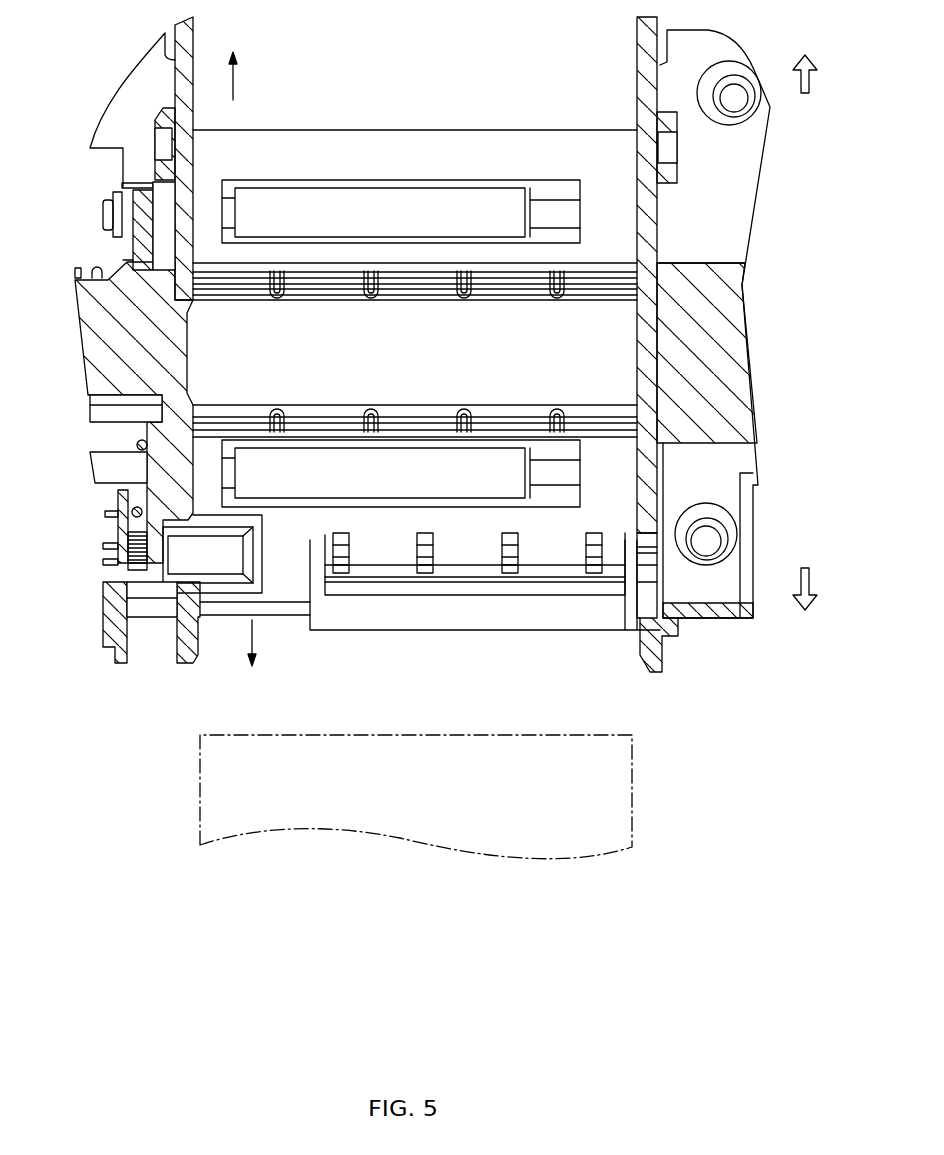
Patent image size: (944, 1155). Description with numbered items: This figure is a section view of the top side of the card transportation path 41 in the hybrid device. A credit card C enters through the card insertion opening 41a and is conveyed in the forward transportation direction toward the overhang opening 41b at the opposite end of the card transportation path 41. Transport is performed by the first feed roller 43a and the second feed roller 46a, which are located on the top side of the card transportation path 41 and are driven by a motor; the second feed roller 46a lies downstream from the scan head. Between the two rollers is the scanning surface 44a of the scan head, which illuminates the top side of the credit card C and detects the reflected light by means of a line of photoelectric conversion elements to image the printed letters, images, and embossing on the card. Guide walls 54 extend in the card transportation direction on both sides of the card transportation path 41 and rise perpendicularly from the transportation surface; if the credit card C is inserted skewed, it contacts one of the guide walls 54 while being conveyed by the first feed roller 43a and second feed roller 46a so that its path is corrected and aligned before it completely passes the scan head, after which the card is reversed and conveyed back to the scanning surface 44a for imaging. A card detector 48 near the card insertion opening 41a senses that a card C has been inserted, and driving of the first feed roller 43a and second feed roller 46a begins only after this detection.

The card transportation path 41 is at (524, 112).
The card insertion opening 41a is at (345, 681).
The overhang opening 41b is at (345, 37).
The first feed roller 43a is at (505, 470).
The scanning surface 44a is at (612, 349).
The second feed roller 46a is at (410, 200).
The card detector 48 is at (183, 547).
The guide walls 54 is at (176, 167).
The credit card C is at (640, 776).